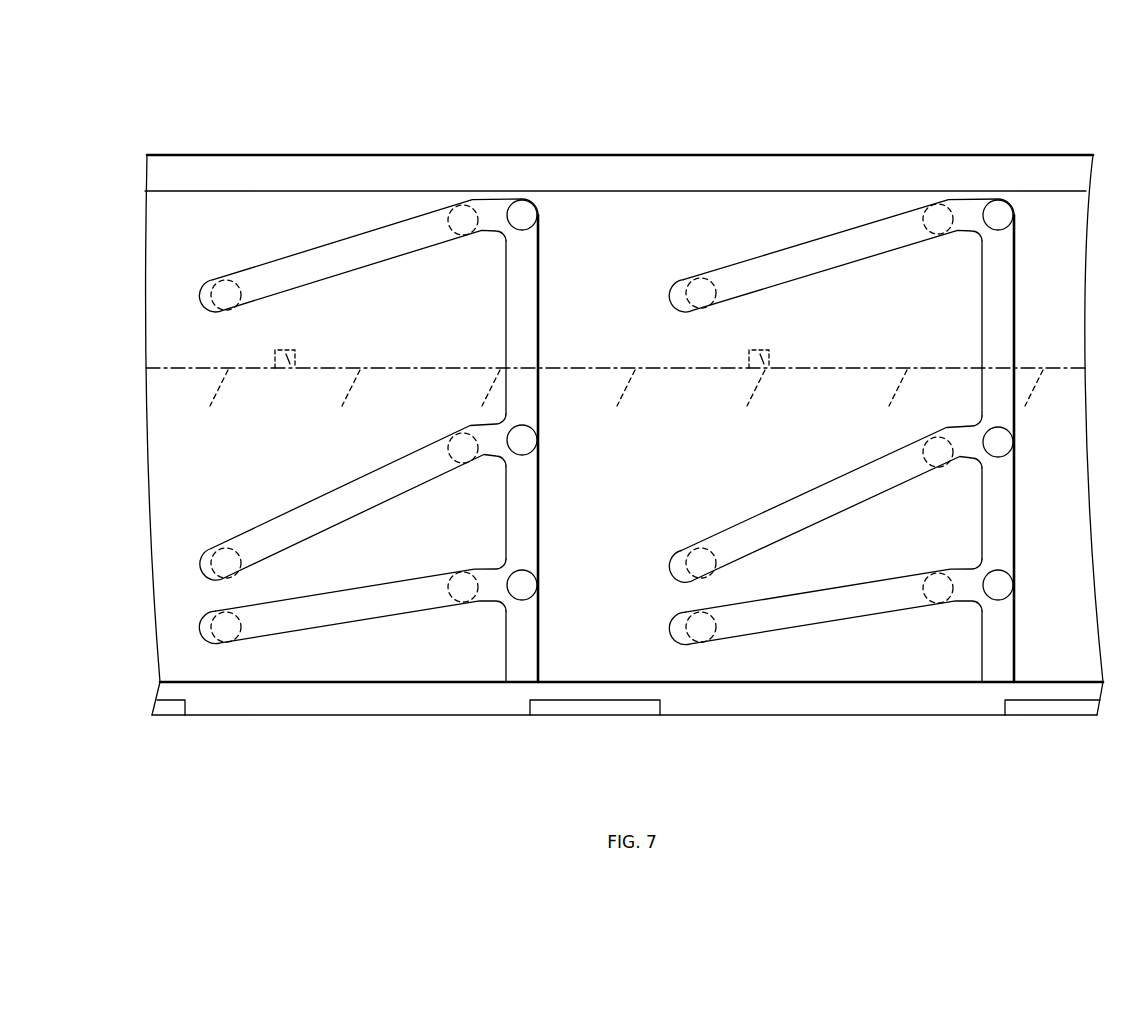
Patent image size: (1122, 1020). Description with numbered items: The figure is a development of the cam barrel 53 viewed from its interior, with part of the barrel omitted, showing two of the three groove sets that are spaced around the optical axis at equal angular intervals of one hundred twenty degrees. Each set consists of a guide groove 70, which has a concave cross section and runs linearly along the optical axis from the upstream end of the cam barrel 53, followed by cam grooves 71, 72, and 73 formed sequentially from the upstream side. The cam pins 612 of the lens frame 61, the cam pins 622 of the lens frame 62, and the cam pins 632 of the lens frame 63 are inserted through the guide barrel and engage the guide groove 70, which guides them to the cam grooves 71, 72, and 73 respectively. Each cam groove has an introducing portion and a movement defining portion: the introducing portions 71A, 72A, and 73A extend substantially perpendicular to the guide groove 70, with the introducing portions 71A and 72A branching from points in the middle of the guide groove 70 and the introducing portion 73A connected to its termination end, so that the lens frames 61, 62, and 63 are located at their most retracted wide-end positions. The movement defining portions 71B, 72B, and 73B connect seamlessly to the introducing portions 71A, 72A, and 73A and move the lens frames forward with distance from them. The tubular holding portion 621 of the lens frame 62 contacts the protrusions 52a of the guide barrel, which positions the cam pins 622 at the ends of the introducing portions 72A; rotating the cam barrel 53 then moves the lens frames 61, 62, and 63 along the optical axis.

The cam barrel 53 is at (838, 126).
The guide groove 70 is at (540, 648).
The cam groove 71 is at (590, 677).
The introducing portion 71A is at (497, 604).
The movement defining portion 71B is at (420, 610).
The cam groove 72 is at (591, 498).
The introducing portion 72A is at (494, 458).
The movement defining portion 72B is at (500, 531).
The cam groove 73 is at (606, 271).
The introducing portion 73A is at (494, 228).
The movement defining portion 73B is at (500, 302).
The cam pin 612 is at (531, 585).
The lens frame 61 is at (760, 585).
The tubular holding portion 621 is at (580, 378).
The cam pin 622 is at (531, 440).
The lens frame 62 is at (617, 388).
The cam pin 632 is at (531, 214).
The lens frame 63 is at (760, 215).
The protrusion 52a is at (288, 347).